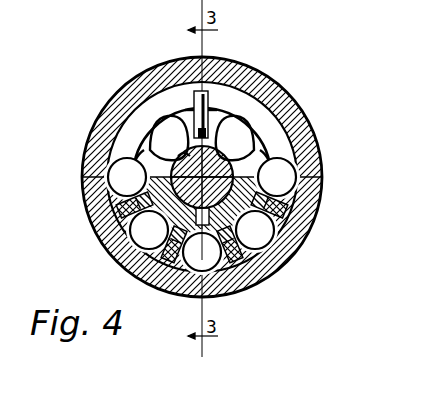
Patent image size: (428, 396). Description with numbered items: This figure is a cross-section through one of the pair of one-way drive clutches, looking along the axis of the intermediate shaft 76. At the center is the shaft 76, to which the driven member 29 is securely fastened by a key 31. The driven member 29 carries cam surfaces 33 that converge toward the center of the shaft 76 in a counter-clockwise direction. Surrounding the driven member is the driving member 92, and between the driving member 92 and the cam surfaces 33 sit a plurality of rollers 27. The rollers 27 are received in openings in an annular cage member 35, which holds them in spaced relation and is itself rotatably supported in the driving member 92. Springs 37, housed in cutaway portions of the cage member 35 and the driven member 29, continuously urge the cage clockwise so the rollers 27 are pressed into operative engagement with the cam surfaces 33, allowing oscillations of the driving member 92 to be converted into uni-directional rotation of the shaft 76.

The rollers 27 is at (250, 138).
The driven member 29 is at (163, 208).
The key 31 is at (218, 157).
The cam surfaces 33 is at (141, 157).
The annular cage member 35 is at (281, 148).
The springs 37 is at (208, 111).
The intermediate shaft 76 is at (185, 157).
The driving member 92 is at (305, 123).